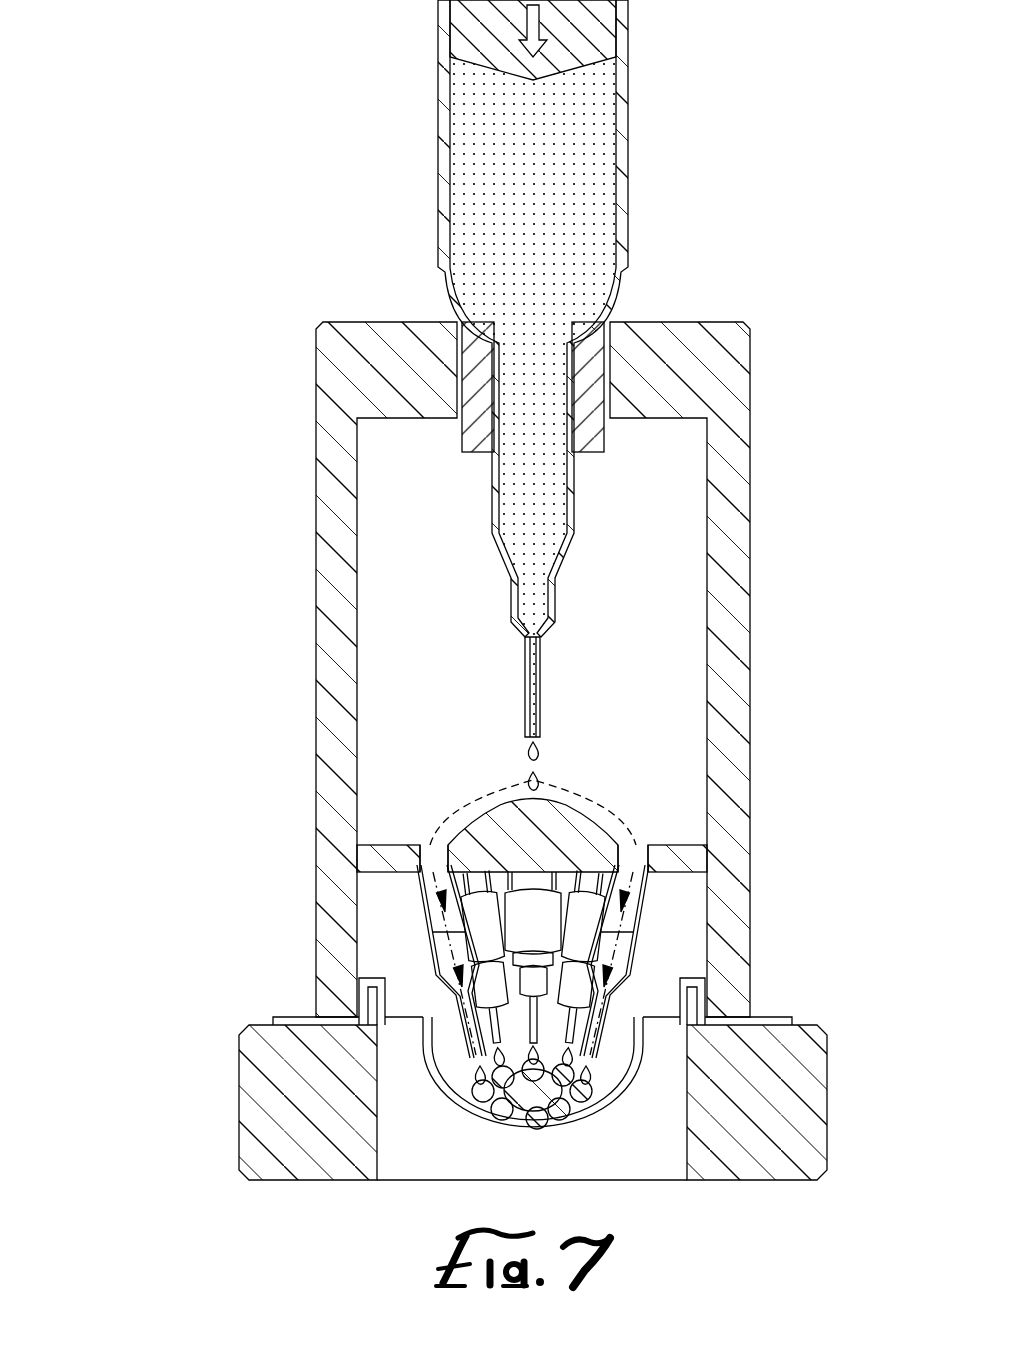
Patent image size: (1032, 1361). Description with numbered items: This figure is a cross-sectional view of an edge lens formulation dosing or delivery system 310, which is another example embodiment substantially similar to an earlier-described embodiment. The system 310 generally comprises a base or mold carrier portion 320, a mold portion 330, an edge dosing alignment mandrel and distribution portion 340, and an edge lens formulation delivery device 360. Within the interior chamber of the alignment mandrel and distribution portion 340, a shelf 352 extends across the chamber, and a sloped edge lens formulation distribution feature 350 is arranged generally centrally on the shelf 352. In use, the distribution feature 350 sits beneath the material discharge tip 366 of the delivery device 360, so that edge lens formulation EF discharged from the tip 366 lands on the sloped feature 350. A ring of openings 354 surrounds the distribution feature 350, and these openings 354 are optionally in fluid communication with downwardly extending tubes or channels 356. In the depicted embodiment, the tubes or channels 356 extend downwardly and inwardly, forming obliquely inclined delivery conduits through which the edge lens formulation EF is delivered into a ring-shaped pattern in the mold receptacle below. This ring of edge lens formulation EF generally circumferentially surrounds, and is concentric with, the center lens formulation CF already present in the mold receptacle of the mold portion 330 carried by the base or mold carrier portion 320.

The edge lens formulation dosing or delivery system 310 is at (474, 703).
The base or mold carrier portion 320 is at (200, 1091).
The mold portion 330 is at (493, 1123).
The edge dosing alignment mandrel and distribution portion 340 is at (785, 698).
The sloped edge lens formulation distribution feature 350 is at (555, 832).
The shelf 352 is at (393, 855).
The openings 354 is at (425, 845).
The tubes or channels 356 is at (427, 878).
The edge lens formulation delivery device 360 is at (680, 112).
The material discharge tip 366 is at (530, 690).
The edge lens formulation EF is at (541, 212).
The center lens formulation CF is at (522, 1074).